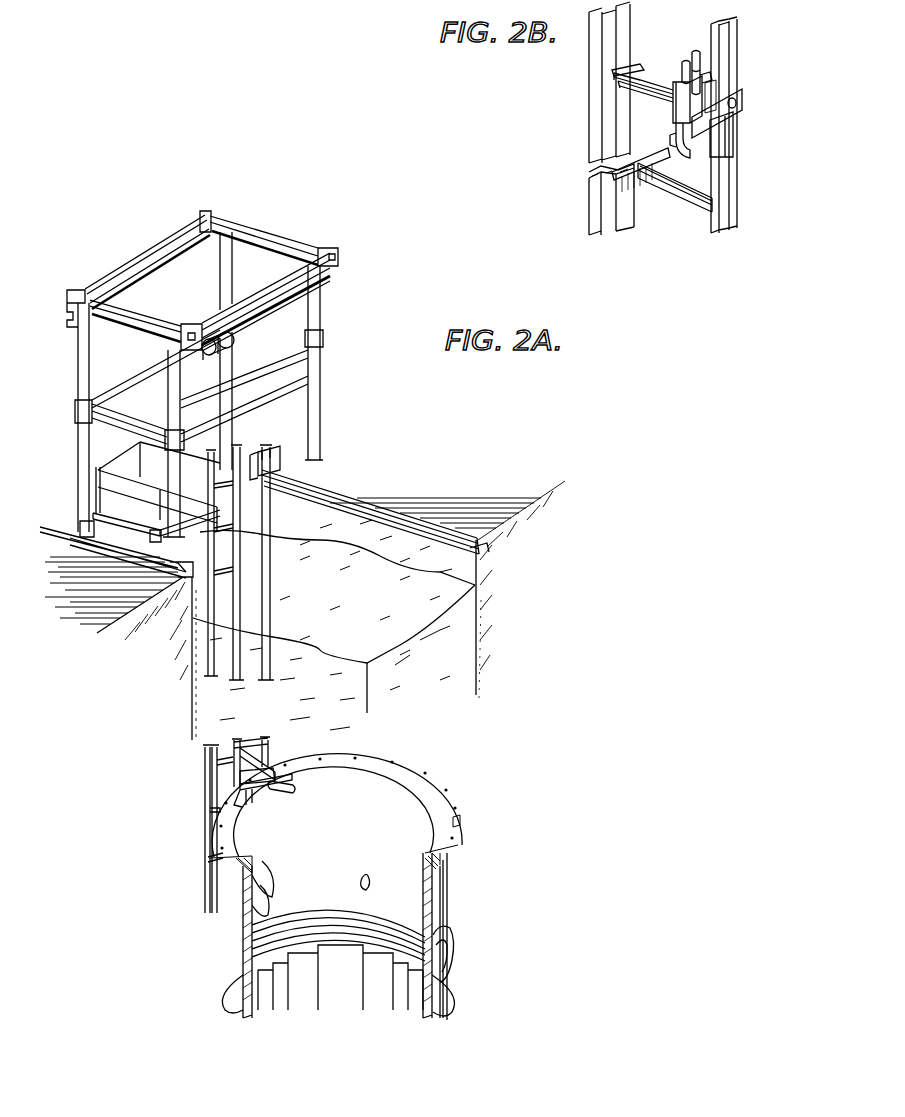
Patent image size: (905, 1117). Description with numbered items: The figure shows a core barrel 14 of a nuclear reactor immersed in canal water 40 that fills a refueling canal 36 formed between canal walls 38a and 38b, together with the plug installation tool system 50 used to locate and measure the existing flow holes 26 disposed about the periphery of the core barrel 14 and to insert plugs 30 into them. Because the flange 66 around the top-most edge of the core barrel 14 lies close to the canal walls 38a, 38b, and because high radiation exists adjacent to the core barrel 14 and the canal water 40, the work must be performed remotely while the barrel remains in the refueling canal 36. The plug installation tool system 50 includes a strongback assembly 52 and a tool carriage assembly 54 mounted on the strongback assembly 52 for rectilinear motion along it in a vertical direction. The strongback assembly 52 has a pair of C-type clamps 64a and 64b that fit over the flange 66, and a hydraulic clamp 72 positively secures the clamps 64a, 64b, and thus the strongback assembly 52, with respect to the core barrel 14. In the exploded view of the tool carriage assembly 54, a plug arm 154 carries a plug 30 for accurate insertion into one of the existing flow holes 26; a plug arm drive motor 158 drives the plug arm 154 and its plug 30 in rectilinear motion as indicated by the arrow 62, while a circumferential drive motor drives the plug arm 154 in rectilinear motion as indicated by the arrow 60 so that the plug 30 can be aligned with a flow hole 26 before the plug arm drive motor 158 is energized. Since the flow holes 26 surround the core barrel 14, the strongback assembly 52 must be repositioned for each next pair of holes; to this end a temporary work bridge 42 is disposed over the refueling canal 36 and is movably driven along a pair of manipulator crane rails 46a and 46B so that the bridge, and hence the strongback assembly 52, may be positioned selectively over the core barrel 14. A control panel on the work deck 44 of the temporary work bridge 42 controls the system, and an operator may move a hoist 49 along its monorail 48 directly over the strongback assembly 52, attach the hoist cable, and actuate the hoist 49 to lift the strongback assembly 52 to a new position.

In FIG. 2A, the core barrel 14 is at (451, 788).
In FIG. 2A, the existing flow holes 26 is at (369, 879).
In FIG. 2B, the plug 30 is at (735, 110).
In FIG. 2A, the refueling canal 36 is at (441, 706).
In FIG. 2A, the canal wall 38a is at (196, 653).
In FIG. 2A, the canal wall 38b is at (479, 560).
In FIG. 2A, the canal water 40 is at (460, 647).
In FIG. 2A, the temporary work bridge 42 is at (275, 224).
In FIG. 2A, the work deck 44 is at (105, 498).
In FIG. 2A, the manipulator crane rail 46a is at (116, 585).
In FIG. 2A, the manipulator crane rail 46B is at (329, 488).
In FIG. 2A, the monorail 48 is at (335, 280).
In FIG. 2A, the hoist 49 is at (234, 347).
In FIG. 2A, the plug installation tool system 50 is at (283, 588).
In FIG. 2A, the strongback assembly 52 is at (205, 790).
In FIG. 2B, the tool carriage assembly 54 is at (580, 97).
In FIG. 2A, the tool carriage assembly 54 is at (286, 508).
In FIG. 2B, the arrow 60 is at (657, 138).
In FIG. 2B, the arrow 62 is at (667, 67).
In FIG. 2A, the clamp 64a is at (265, 749).
In FIG. 2A, the clamp 64b is at (250, 800).
In FIG. 2A, the flange 66 is at (456, 838).
In FIG. 2A, the hydraulic clamp 72 is at (295, 790).
In FIG. 2B, the plug arm 154 is at (742, 97).
In FIG. 2B, the plug arm drive motor 158 is at (697, 48).